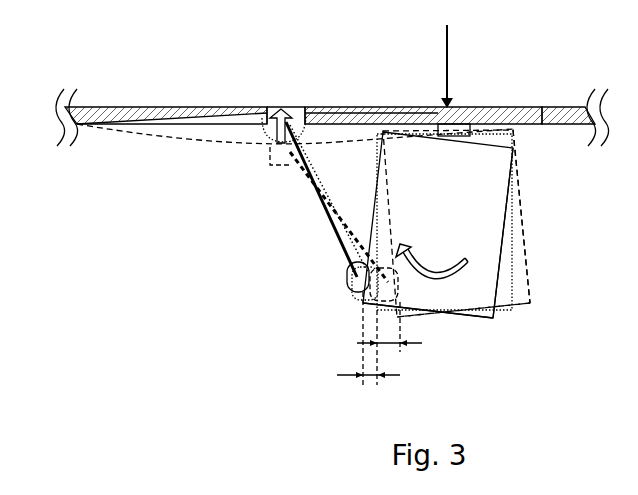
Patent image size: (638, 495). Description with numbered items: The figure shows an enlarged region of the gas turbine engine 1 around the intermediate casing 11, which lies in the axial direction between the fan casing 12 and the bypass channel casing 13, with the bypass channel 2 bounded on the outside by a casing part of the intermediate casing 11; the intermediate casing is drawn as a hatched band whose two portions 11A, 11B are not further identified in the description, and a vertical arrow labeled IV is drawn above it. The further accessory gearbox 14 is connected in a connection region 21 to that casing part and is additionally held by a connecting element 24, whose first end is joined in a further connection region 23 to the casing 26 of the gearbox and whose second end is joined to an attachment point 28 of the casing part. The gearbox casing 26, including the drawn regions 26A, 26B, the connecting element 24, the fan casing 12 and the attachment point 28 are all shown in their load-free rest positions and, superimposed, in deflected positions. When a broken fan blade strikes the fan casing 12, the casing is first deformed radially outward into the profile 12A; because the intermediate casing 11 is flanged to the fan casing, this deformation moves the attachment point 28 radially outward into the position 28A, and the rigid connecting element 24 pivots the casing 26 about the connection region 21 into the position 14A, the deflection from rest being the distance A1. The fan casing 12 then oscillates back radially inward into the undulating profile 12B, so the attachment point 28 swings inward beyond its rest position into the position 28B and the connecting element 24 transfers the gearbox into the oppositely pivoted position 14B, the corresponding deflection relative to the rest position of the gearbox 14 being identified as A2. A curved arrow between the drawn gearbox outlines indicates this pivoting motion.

The gas turbine engine 1 is at (68, 62).
The bypass channel 2 is at (302, 62).
The intermediate casing 11 is at (378, 106).
The lower layer of second panel 11A is at (337, 138).
The upper layer of second panel 11B is at (335, 106).
The fan casing 12 is at (132, 106).
The profile of fan casing 12A is at (104, 130).
The profile of fan casing 12B is at (185, 117).
The bypass channel casing 13 is at (565, 106).
The further accessory gearbox 14 is at (523, 306).
The pivoted position of further accessory gearbox 14A is at (532, 237).
The pivoted position of further accessory gearbox 14B is at (452, 320).
The connection region 21 is at (472, 119).
The further connection region 23 is at (346, 289).
The connecting element 24 is at (332, 235).
The casing of further accessory gearbox 26 is at (511, 268).
The side wall of component 26A is at (518, 202).
The bottom wall of component 26B is at (483, 319).
The attachment point 28 is at (275, 148).
The deflected position of attachment point 28A is at (286, 165).
The deflected position of attachment point 28B is at (291, 115).
The deflection of further accessory gearbox A1 is at (390, 346).
The deflection of further accessory gearbox A2 is at (368, 377).
The viewing direction of Fig. 4 IV is at (448, 38).